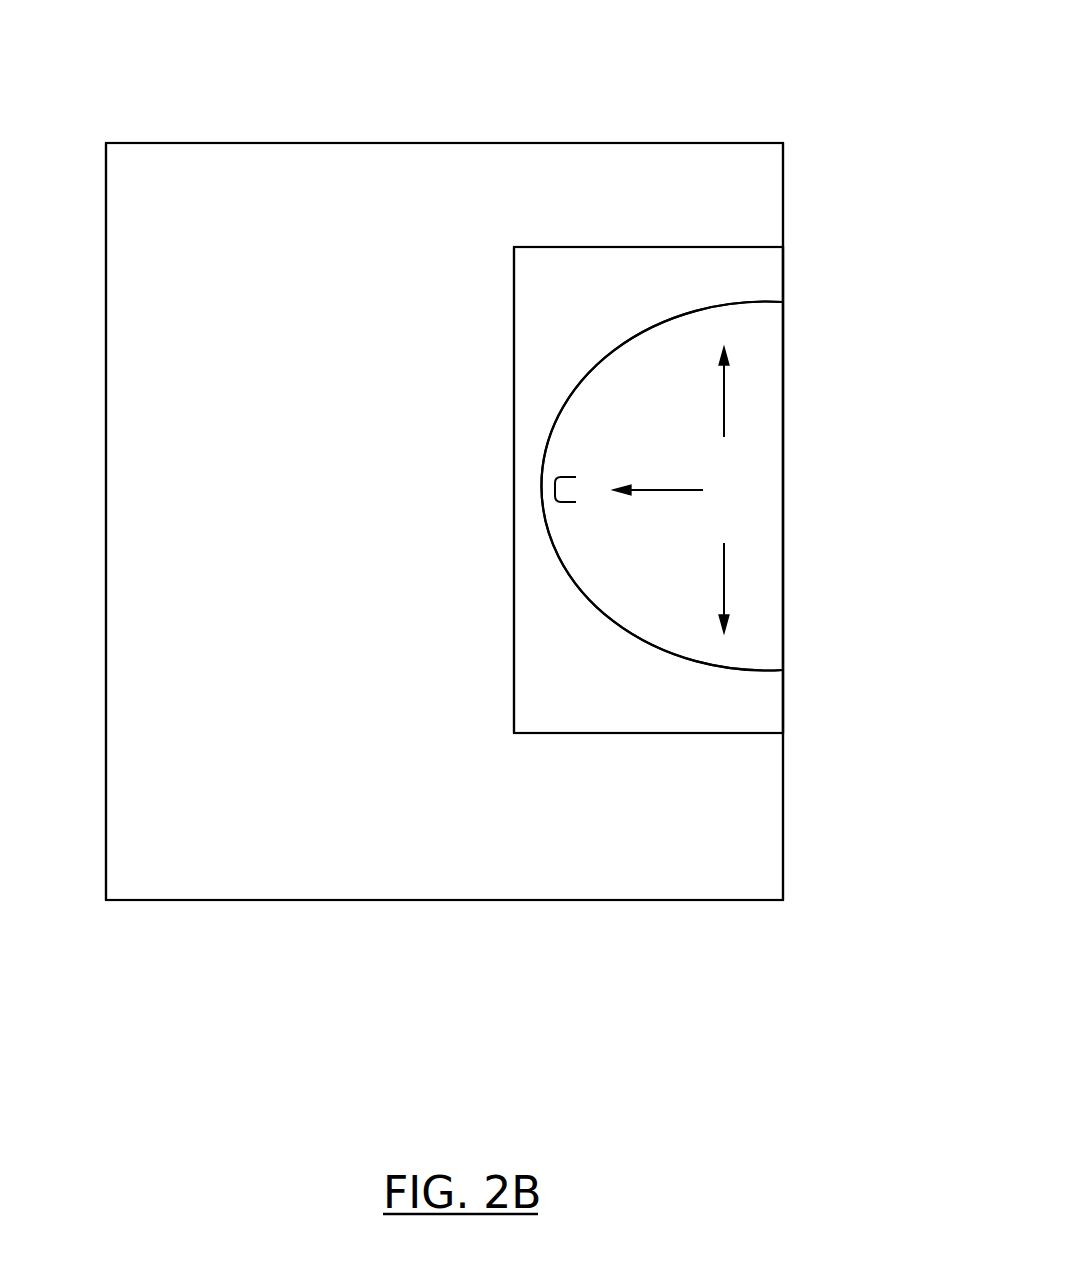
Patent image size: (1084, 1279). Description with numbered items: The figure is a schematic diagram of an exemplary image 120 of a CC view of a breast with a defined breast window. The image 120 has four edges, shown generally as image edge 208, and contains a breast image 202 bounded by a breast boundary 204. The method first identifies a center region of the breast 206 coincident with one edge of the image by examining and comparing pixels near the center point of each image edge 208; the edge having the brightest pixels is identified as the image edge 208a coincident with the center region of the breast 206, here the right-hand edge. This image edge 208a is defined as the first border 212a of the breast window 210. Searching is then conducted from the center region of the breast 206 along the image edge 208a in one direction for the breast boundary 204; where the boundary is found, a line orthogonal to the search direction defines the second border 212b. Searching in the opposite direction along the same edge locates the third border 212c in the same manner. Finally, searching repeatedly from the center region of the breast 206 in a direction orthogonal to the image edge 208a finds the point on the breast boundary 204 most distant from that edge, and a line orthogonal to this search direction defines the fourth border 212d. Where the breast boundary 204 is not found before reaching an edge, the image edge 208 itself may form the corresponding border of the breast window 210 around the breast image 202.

The image 120 is at (627, 83).
The breast image 202 is at (762, 343).
The breast boundary 204 is at (691, 655).
The center region of the breast 206 is at (790, 478).
The image edge 208 is at (133, 152).
The image edge coincident with the center region of the breast 208a is at (783, 810).
The breast window 210 is at (598, 240).
The first border 212a is at (783, 390).
The second border 212b is at (657, 247).
The third border 212c is at (597, 733).
The fourth border 212d is at (514, 536).